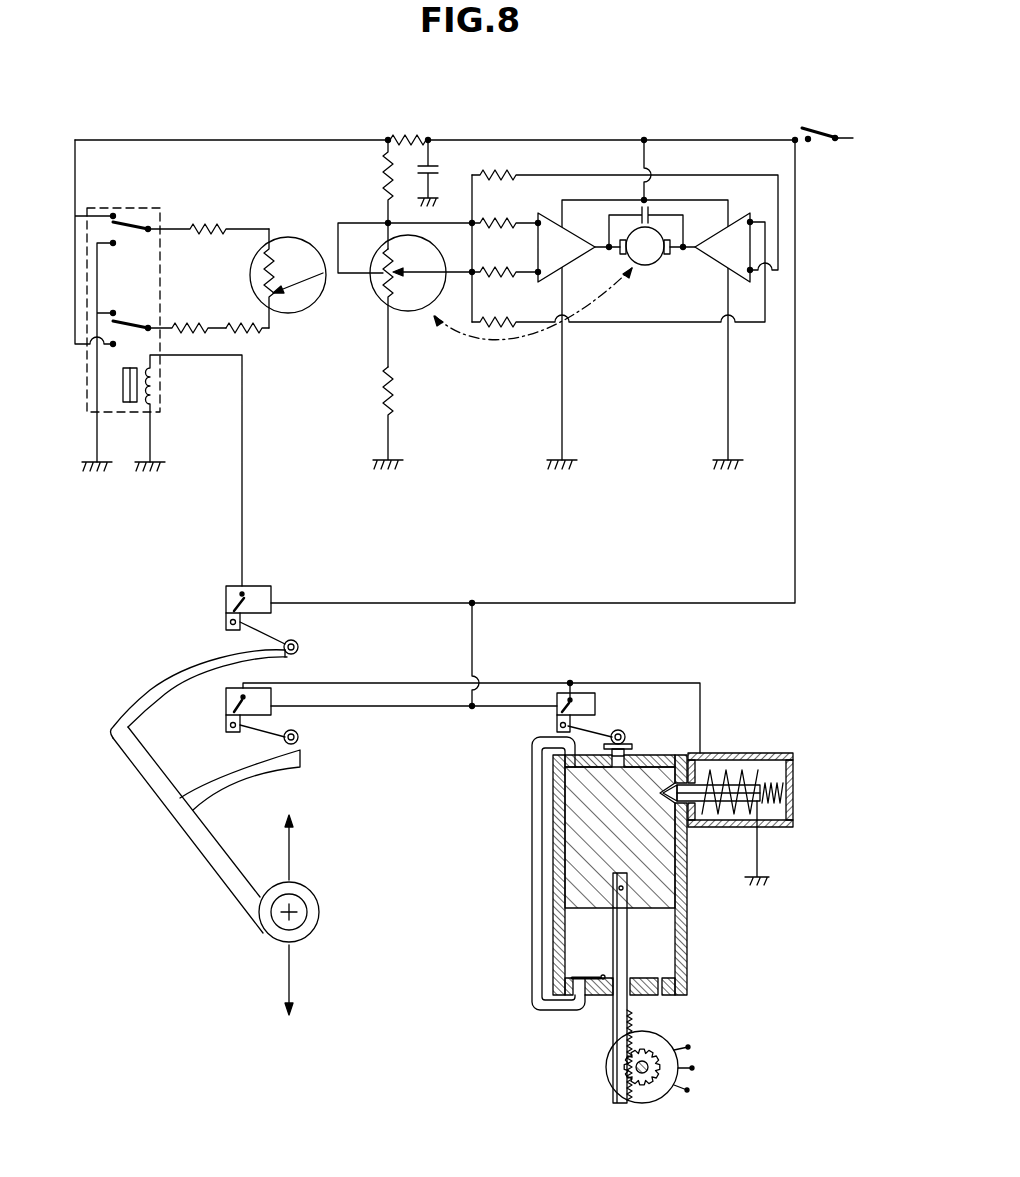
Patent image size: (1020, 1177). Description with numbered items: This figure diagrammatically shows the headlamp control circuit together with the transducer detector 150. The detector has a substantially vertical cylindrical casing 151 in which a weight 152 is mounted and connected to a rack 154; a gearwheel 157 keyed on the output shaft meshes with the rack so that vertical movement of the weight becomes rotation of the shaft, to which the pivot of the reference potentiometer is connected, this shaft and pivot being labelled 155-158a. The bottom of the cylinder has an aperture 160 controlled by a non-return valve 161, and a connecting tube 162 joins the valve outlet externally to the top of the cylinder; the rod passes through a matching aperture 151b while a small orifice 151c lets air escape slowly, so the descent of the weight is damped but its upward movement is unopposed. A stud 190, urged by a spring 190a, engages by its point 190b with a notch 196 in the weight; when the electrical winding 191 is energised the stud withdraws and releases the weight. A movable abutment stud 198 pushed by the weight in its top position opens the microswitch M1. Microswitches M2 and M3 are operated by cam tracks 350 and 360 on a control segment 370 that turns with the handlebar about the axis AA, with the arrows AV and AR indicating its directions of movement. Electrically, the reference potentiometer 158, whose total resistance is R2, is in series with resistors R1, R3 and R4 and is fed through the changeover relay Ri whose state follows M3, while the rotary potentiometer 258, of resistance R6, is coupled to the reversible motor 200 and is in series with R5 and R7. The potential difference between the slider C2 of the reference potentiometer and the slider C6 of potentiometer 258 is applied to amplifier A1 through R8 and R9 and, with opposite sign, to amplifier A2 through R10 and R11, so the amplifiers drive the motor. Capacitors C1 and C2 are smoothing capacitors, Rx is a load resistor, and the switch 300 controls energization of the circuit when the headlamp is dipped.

The resistor R1 is at (208, 215).
The total internal resistance of potentiometer 158 R2 is at (293, 278).
The resistor R3 is at (247, 314).
The resistor R4 is at (187, 314).
The resistor R5 is at (384, 182).
The total internal resistance of potentiometer 258 R6 is at (427, 305).
The resistor R7 is at (381, 398).
The resistor R8 is at (505, 212).
The resistor R9 is at (505, 261).
The resistor R10 is at (618, 274).
The resistor R11 is at (625, 208).
The load resistor Rx is at (402, 132).
The smoothing capacitor C1 is at (432, 168).
The capacitor / slider of potentiometer 158 C2 is at (648, 206).
The slider of potentiometer 258 C6 is at (432, 270).
The changeover relay Ri is at (125, 420).
The reference potentiometer 158 is at (292, 317).
The rotary potentiometer 258 is at (415, 320).
The amplifier A1 is at (575, 252).
The amplifier A2 is at (714, 252).
The motor 200 is at (650, 266).
The switch 300 is at (815, 126).
The microswitch M1 is at (583, 693).
The microswitch M2 is at (222, 706).
The microswitch M3 is at (220, 603).
The cam track 350 is at (150, 692).
The cam track 360 is at (203, 788).
The movable control segment 370 is at (197, 862).
The axis AA is at (292, 910).
The forward direction AV is at (292, 833).
The reverse direction AR is at (290, 997).
The transducer detector 150 is at (505, 867).
The weight 152 is at (583, 798).
The rack 154 is at (621, 955).
The gearwheel 157 is at (647, 1072).
The aperture 160 is at (583, 1000).
The non-return valve 161 is at (585, 973).
The connecting tube 162 is at (537, 926).
The cylindrical casing 151 is at (688, 921).
The matching aperture 151b is at (636, 1003).
The small orifice 151c is at (668, 1004).
The stud 190 is at (700, 790).
The spring 190a is at (786, 790).
The point of the stud 190b is at (685, 803).
The electrical winding 191 is at (725, 780).
The notch 196 is at (661, 806).
The movable abutment stud 198 is at (633, 749).
The shaft and potentiometer pivot 155-158a is at (665, 1094).